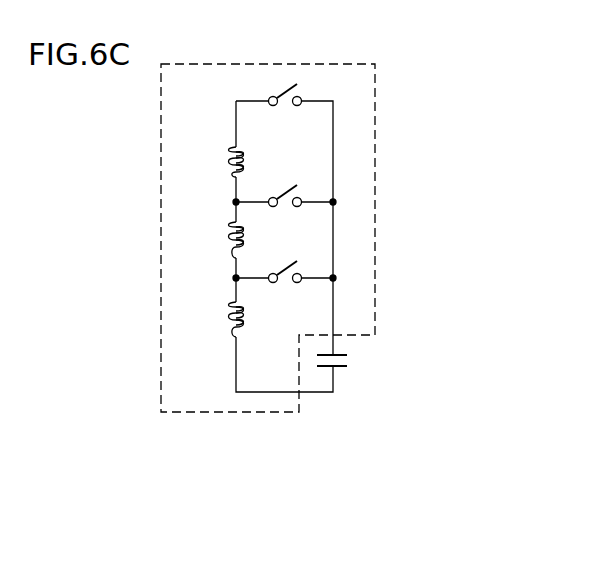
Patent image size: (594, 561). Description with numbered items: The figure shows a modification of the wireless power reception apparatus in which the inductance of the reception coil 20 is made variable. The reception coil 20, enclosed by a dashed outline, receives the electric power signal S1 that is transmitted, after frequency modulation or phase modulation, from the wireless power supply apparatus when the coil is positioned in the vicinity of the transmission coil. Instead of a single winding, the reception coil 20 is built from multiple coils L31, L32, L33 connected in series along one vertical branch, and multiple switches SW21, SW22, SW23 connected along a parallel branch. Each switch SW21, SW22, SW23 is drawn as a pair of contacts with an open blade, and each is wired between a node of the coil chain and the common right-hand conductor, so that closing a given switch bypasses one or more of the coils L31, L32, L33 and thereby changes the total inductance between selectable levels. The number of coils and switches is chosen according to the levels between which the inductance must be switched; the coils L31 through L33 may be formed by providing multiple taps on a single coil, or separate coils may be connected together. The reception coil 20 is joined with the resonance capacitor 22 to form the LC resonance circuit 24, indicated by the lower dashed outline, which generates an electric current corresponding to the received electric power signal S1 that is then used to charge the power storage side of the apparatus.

The reception coil 20 is at (376, 216).
The resonance capacitor 22 is at (349, 361).
The LC resonance circuit 24 is at (280, 452).
The electric power signal S1 is at (152, 242).
The coil L31 is at (228, 168).
The coil L32 is at (228, 245).
The coil L33 is at (228, 324).
The switch SW21 is at (287, 108).
The switch SW22 is at (287, 209).
The switch SW23 is at (287, 285).